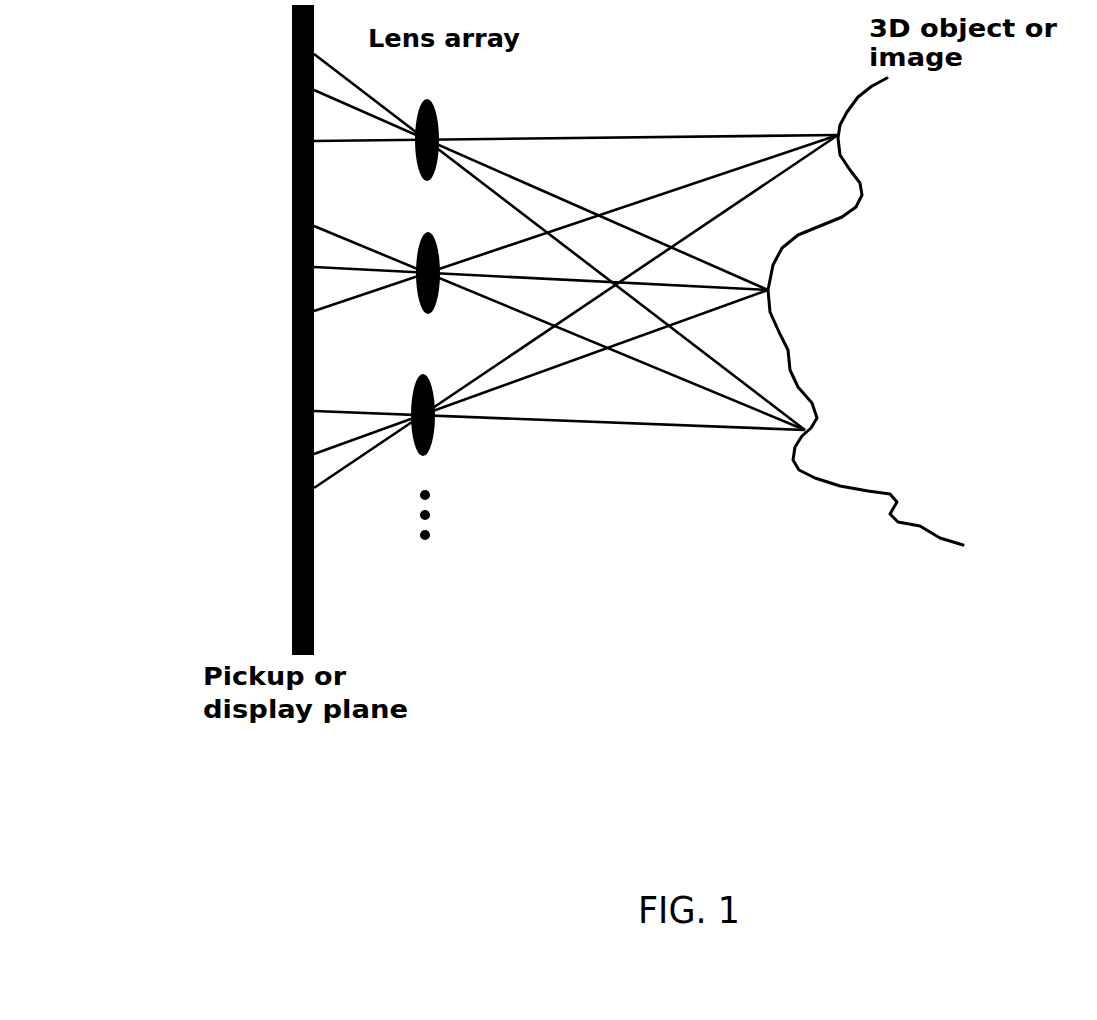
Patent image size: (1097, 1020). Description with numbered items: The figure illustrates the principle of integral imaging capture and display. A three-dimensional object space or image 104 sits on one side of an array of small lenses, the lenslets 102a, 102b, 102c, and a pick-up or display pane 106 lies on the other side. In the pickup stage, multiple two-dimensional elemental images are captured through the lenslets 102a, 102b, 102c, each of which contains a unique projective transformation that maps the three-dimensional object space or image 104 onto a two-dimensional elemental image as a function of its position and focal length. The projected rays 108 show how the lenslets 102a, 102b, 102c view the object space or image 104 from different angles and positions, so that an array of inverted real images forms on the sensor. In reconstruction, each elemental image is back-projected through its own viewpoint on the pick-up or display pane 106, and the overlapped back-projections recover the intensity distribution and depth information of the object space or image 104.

The lenslet 102a is at (438, 110).
The lenslet 102b is at (440, 253).
The lenslet 102c is at (437, 438).
The 3D object space or image 104 is at (868, 82).
The pick-up or display pane 106 is at (292, 112).
The projected rays 108 is at (608, 348).